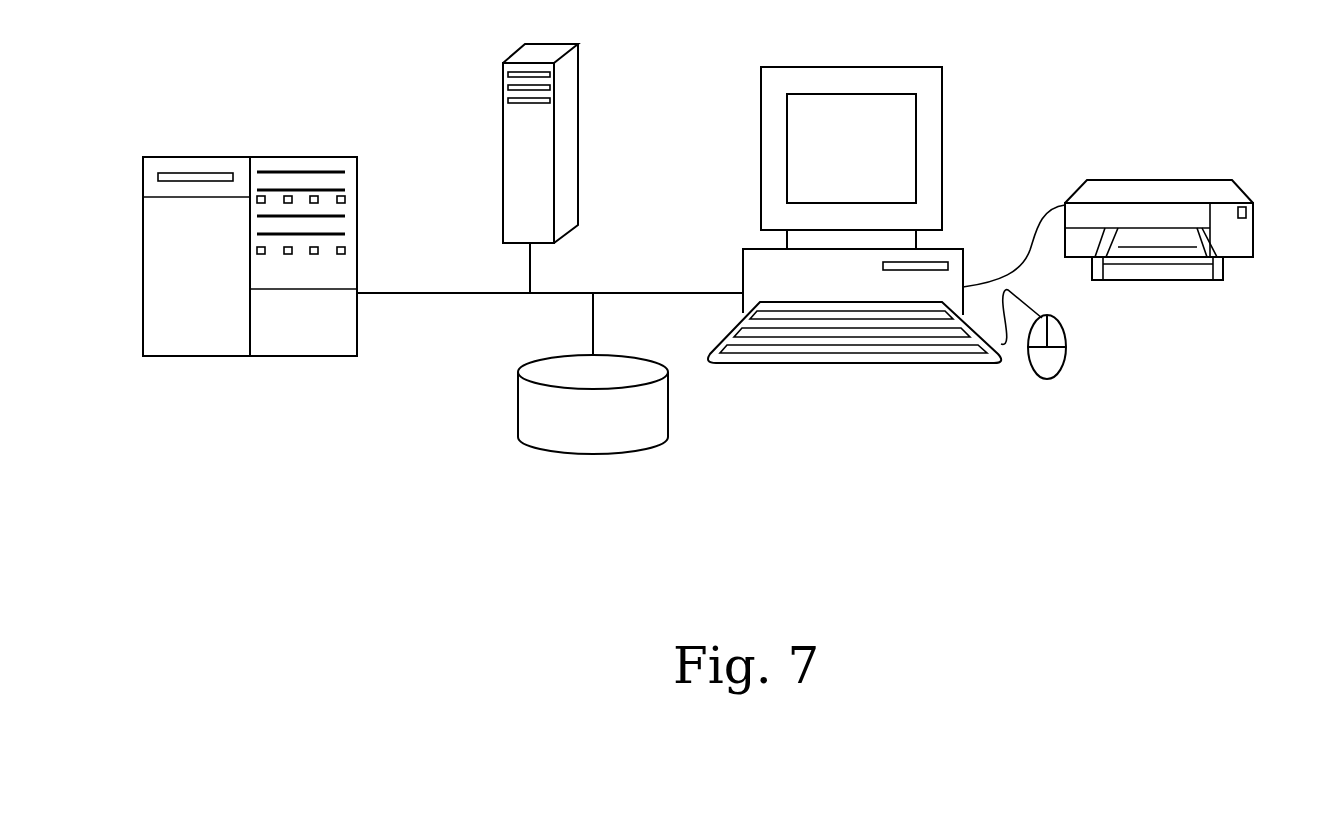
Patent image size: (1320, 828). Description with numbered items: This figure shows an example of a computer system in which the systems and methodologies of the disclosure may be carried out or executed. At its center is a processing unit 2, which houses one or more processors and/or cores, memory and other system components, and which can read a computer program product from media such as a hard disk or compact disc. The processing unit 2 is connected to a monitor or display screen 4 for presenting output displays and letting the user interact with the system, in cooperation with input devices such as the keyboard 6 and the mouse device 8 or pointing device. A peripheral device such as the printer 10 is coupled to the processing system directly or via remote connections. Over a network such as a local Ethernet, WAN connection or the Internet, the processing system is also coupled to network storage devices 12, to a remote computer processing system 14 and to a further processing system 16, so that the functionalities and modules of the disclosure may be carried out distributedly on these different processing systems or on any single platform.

The processing unit 2 is at (743, 276).
The monitor or display screen 4 is at (943, 144).
The keyboard 6 is at (910, 366).
The mouse device 8 is at (1066, 365).
The printer 10 is at (1157, 180).
The network storage devices 12 is at (612, 452).
The remote computer processing system 14 is at (580, 132).
The processing system 16 is at (292, 157).